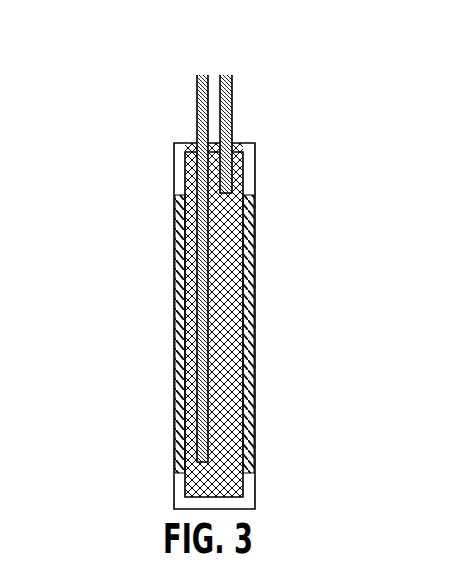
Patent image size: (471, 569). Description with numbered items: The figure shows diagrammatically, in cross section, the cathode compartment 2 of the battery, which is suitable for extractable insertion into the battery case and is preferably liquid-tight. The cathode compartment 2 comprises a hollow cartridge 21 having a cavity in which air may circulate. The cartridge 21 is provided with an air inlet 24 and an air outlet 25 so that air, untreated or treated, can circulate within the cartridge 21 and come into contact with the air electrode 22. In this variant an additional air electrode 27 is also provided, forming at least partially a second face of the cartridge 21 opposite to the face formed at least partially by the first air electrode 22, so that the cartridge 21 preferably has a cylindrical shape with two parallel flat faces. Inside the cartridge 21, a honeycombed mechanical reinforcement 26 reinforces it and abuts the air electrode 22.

The cathode compartment 2 is at (162, 107).
The hollow cartridge 21 is at (174, 188).
The air electrode 22 is at (256, 283).
The air inlet 24 is at (200, 70).
The air outlet 25 is at (226, 69).
The honeycombed mechanical reinforcement 26 is at (234, 416).
The additional air electrode 27 is at (174, 353).